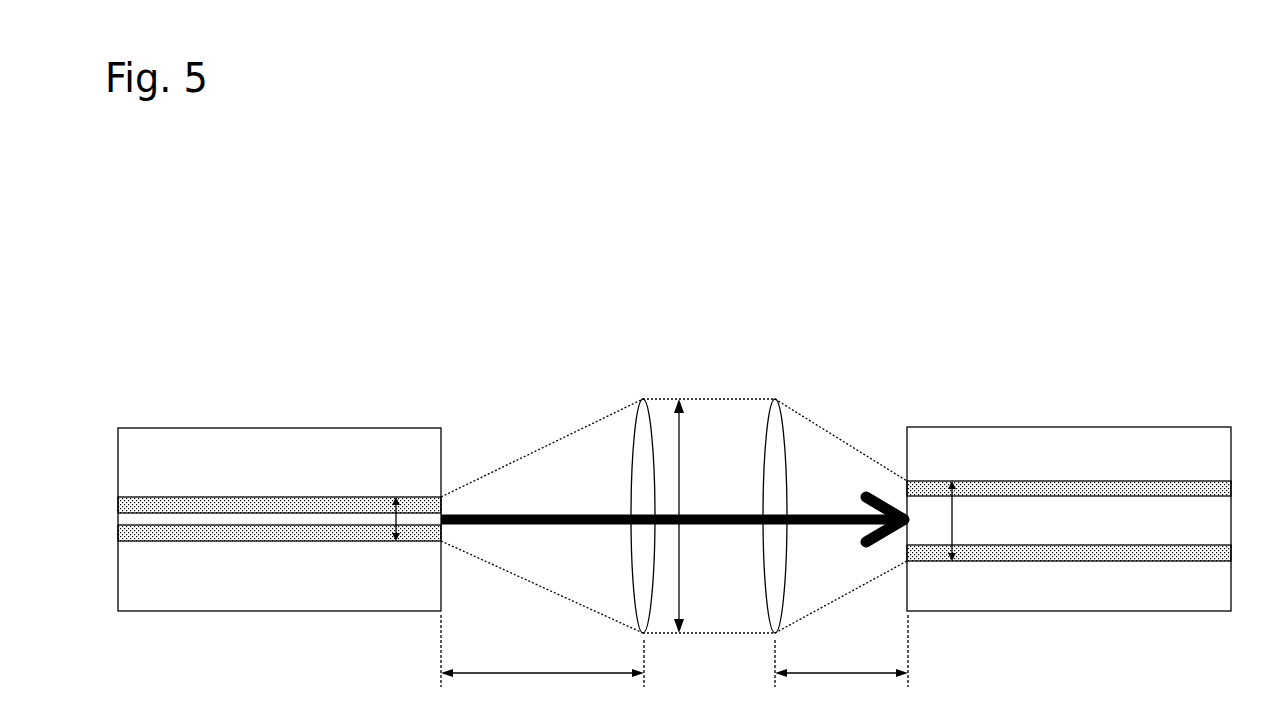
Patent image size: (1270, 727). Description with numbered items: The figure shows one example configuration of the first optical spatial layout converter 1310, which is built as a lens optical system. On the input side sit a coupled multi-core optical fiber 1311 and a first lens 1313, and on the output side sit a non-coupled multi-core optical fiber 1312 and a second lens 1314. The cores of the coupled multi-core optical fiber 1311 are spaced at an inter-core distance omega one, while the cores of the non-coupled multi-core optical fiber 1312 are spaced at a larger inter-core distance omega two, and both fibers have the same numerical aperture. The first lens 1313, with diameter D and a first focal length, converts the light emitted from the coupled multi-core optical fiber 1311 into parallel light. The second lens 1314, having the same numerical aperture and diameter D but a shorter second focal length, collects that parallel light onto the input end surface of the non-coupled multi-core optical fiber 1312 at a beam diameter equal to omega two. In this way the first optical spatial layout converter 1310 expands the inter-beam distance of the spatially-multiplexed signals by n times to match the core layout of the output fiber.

The first optical spatial layout converter 1310 is at (830, 243).
The coupled multi-core optical fiber 1311 is at (201, 428).
The non-coupled multi-core optical fiber 1312 is at (1123, 427).
The first lens 1313 is at (634, 444).
The second lens 1314 is at (785, 444).